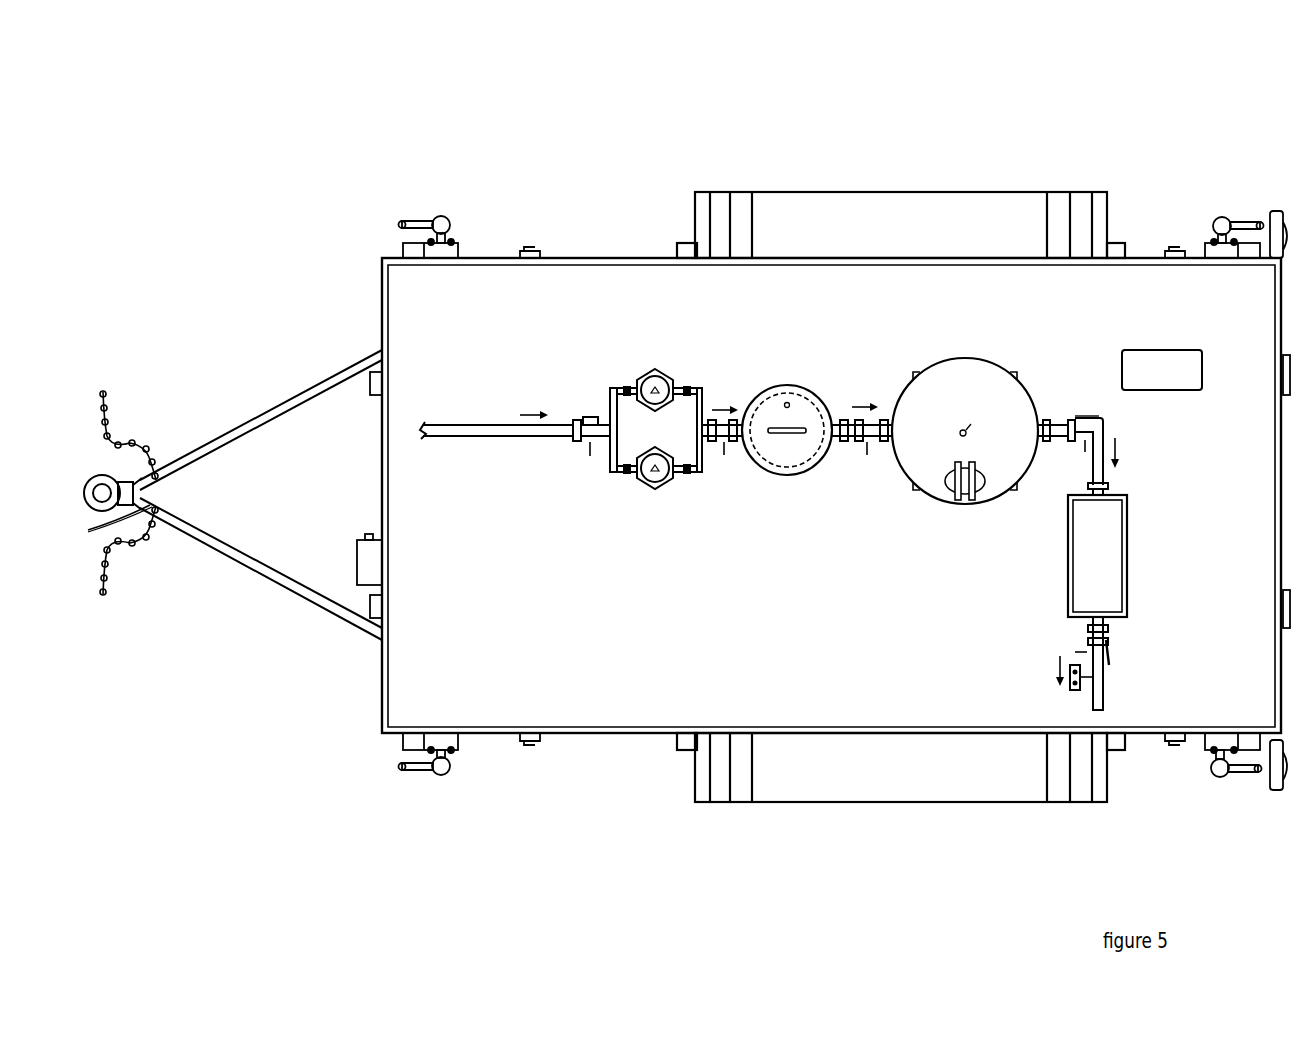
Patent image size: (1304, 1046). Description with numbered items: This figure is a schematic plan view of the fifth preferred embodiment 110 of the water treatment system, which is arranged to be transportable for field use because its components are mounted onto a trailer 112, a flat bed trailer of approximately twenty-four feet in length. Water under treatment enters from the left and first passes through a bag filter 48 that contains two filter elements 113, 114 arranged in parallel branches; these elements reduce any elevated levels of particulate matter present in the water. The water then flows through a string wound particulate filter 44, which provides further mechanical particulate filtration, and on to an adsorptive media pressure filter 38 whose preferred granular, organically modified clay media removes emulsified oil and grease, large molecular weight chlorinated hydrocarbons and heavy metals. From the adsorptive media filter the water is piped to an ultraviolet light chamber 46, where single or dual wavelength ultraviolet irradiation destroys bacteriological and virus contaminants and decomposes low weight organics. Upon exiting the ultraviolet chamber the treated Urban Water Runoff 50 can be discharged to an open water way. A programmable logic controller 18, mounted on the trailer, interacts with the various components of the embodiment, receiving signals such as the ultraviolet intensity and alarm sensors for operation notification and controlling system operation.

The fifth preferred embodiment 110 is at (660, 136).
The trailer 112 is at (380, 688).
The bag filter 48 is at (640, 360).
The filter element 113 is at (670, 380).
The filter element 114 is at (655, 492).
The string wound particulate filter 44 is at (793, 385).
The adsorptive media pressure filter 38 is at (1027, 391).
The ultraviolet light chamber 46 is at (1130, 536).
The treated Urban Water Runoff 50 is at (1105, 710).
The programmable logic controller 18 is at (1168, 350).